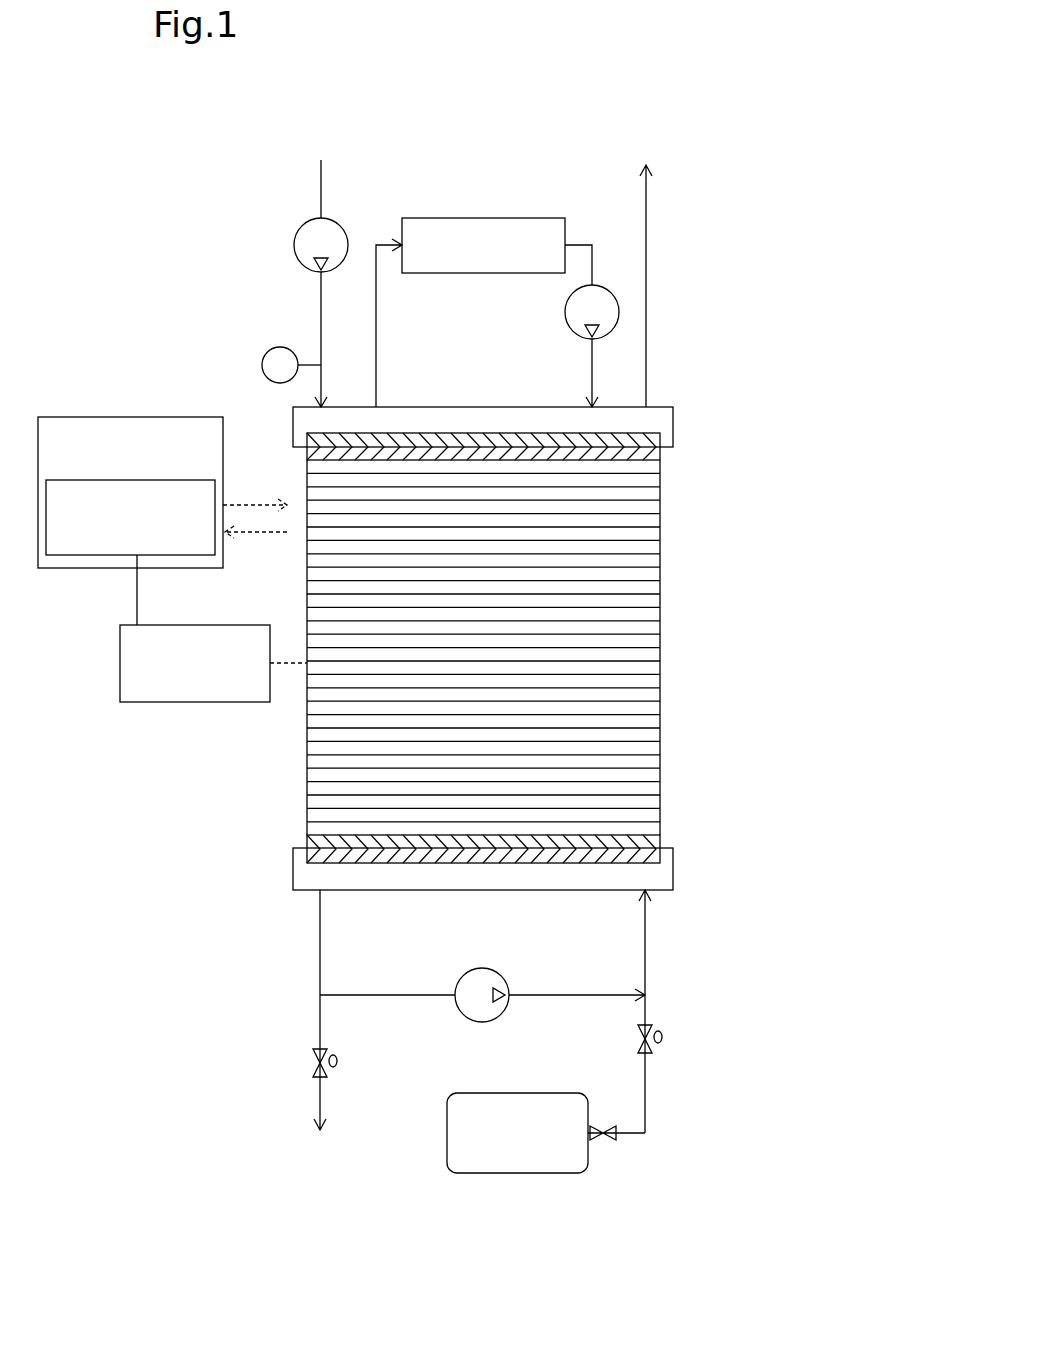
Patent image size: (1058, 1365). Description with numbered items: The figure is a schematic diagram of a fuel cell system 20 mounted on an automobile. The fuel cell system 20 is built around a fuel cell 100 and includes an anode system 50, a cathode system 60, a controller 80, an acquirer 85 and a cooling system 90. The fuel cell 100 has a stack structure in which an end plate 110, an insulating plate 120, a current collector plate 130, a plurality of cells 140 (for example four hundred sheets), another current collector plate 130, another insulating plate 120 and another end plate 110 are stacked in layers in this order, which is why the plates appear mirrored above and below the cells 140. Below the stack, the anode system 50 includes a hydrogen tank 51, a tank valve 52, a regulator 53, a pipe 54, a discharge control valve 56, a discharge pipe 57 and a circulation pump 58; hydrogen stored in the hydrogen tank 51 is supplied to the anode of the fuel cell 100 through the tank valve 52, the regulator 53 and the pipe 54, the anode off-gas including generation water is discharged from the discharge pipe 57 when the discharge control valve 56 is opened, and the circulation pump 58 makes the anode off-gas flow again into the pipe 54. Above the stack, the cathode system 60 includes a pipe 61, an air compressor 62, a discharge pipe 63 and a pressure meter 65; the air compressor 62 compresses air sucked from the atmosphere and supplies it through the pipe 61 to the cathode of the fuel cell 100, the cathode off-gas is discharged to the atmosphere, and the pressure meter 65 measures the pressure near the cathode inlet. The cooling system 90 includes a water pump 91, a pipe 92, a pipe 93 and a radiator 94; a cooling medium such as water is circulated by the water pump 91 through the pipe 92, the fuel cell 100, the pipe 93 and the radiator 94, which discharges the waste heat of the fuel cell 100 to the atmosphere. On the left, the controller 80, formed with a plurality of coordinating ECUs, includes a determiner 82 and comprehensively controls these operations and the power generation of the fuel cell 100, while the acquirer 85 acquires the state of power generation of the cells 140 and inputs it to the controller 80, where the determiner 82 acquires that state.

The fuel cell system 20 is at (806, 151).
The anode system 50 is at (707, 1136).
The hydrogen tank 51 is at (522, 1175).
The tank valve 52 is at (606, 1142).
The regulator 53 is at (636, 1040).
The pipe 54 is at (646, 1003).
The discharge control valve 56 is at (314, 1070).
The discharge pipe 57 is at (321, 1106).
The circulation pump 58 is at (484, 1022).
The cathode system 60 is at (695, 191).
The pipe 61 is at (321, 312).
The air compressor 62 is at (294, 248).
The discharge pipe 63 is at (646, 312).
The pressure meter 65 is at (262, 365).
The controller 80 is at (112, 417).
The determiner 82 is at (108, 568).
The acquirer 85 is at (200, 702).
The cooling system 90 is at (563, 202).
The water pump 91 is at (565, 312).
The pipe 92 is at (592, 380).
The pipe 93 is at (376, 300).
The radiator 94 is at (487, 218).
The fuel cell 100 is at (756, 410).
The end plate 110 is at (673, 415).
The insulating plate 120 is at (666, 450).
The current collector plate 130 is at (662, 470).
The cells 140 is at (660, 660).